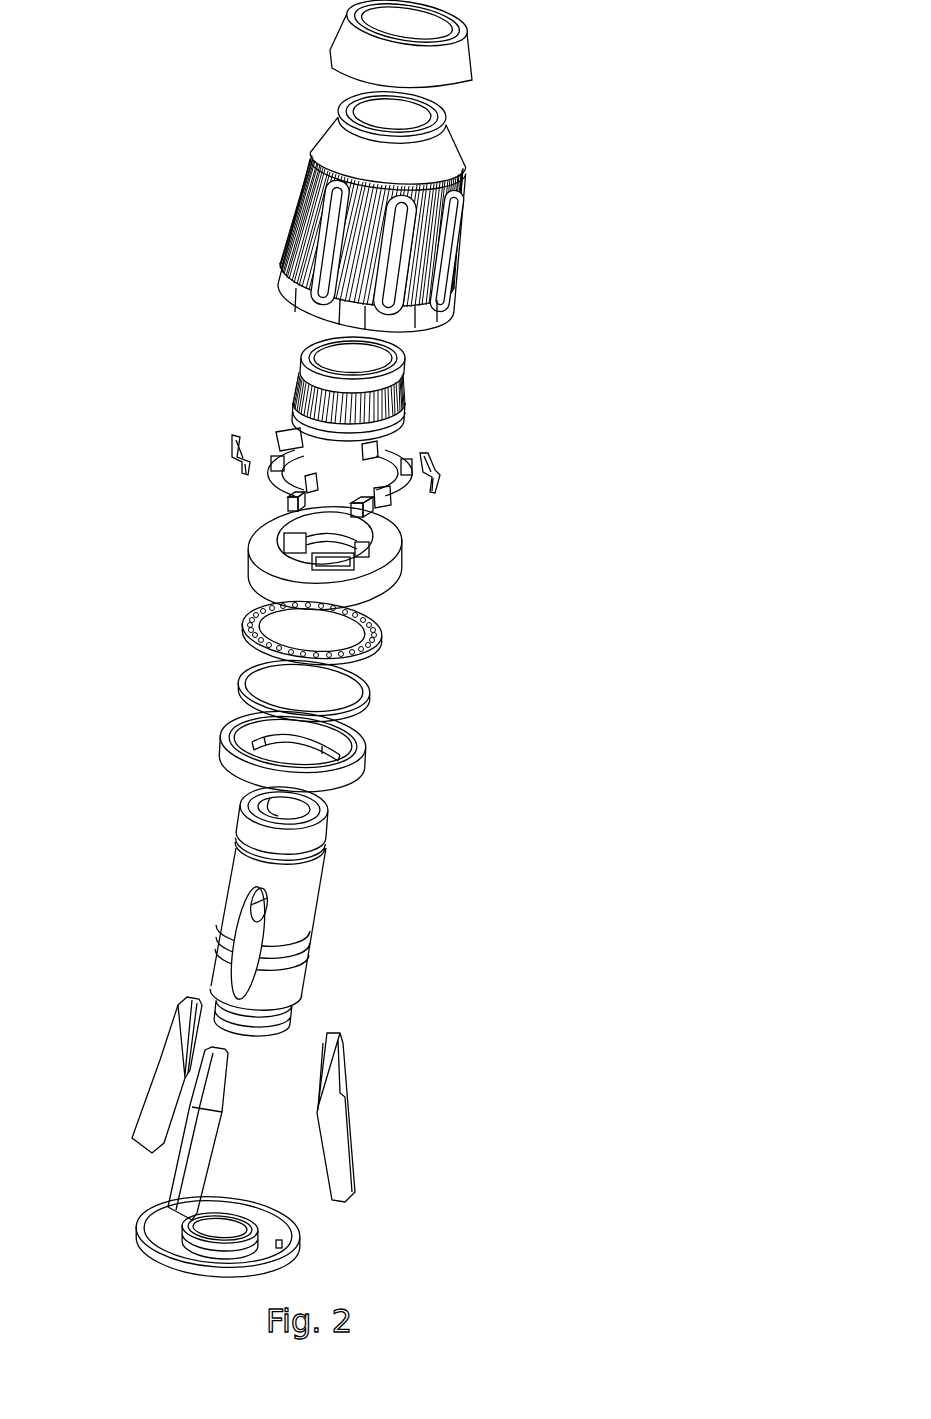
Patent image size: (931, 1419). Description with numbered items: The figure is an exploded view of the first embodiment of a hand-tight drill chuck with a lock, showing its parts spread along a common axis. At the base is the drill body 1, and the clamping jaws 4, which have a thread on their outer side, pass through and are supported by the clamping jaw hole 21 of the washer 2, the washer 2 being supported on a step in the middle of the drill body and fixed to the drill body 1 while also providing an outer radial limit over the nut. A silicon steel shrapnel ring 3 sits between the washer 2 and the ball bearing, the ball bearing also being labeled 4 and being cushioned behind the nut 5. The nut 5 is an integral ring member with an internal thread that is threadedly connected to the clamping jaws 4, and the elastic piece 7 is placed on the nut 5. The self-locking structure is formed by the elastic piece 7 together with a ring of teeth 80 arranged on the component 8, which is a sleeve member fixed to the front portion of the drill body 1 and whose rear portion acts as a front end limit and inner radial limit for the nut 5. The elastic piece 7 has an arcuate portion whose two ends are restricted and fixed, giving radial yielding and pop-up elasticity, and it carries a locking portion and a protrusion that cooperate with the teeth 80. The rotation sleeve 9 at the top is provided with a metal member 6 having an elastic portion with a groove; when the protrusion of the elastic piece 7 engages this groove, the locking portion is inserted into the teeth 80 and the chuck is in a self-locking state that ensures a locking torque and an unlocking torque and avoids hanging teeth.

The drill body 1 is at (287, 897).
The washer 2 is at (326, 744).
The clamping jaw hole 21 is at (250, 737).
The silicon steel shrapnel ring 3 is at (243, 680).
The clamping jaw 4 is at (382, 633).
The nut 5 is at (393, 567).
The metal member 6 is at (436, 482).
The elastic piece 7 is at (285, 440).
The component fixed to the drill body 8 is at (351, 339).
The ring of teeth 80 is at (300, 372).
The rotation sleeve 9 is at (433, 155).